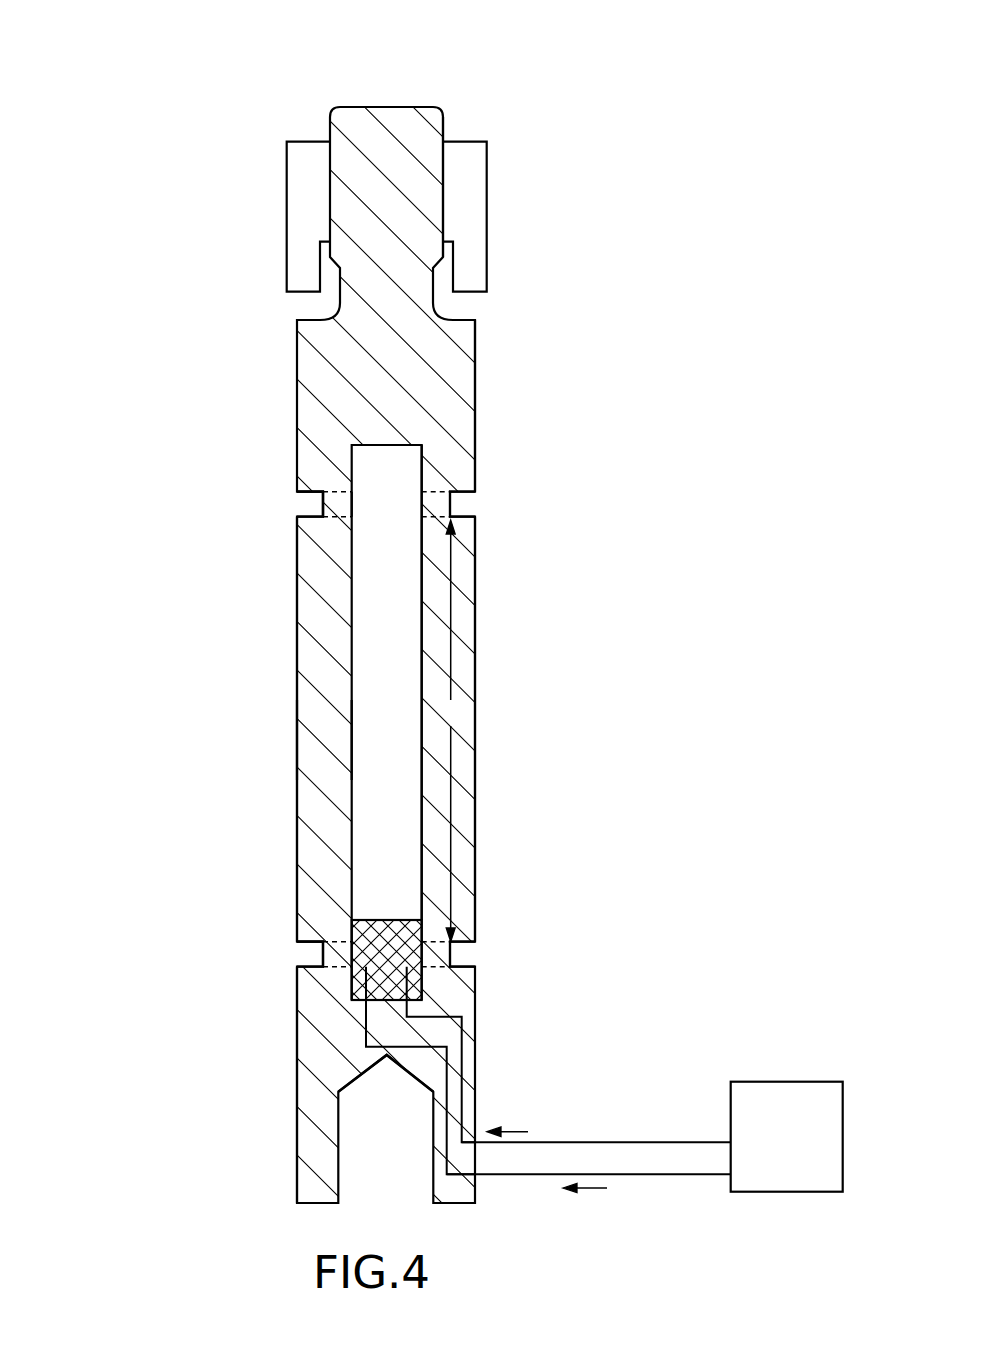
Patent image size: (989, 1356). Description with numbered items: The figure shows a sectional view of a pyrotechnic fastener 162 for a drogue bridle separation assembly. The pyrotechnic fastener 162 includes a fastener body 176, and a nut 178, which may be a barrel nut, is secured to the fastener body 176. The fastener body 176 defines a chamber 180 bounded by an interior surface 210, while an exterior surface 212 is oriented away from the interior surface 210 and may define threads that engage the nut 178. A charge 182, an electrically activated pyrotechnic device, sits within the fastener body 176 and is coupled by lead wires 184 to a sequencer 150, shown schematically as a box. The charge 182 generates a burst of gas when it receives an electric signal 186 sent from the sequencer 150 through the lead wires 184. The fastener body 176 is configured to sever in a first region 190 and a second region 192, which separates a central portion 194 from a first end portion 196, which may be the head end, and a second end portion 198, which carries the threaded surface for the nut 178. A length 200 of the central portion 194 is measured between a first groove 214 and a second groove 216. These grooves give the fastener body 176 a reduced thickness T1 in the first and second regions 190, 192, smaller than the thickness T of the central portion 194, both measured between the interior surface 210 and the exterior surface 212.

The pyrotechnic fastener 162 is at (169, 105).
The fastener body 176 is at (317, 648).
The nut 178 is at (303, 205).
The chamber 180 is at (345, 449).
The charge 182 is at (352, 930).
The lead wire 184 is at (595, 1174).
The electric signal 186 is at (563, 1160).
The first region 190 is at (488, 943).
The second region 192 is at (488, 482).
The central portion 194 is at (486, 521).
The first end portion 196 is at (283, 973).
The second end portion 198 is at (543, 105).
The length 200 is at (449, 731).
The interior surface 210 is at (425, 577).
The exterior surface 212 is at (298, 532).
The first groove 214 is at (286, 952).
The second groove 216 is at (284, 487).
The thickness T is at (364, 738).
The thickness T1 is at (364, 504).
The sequencer 150 is at (767, 1148).